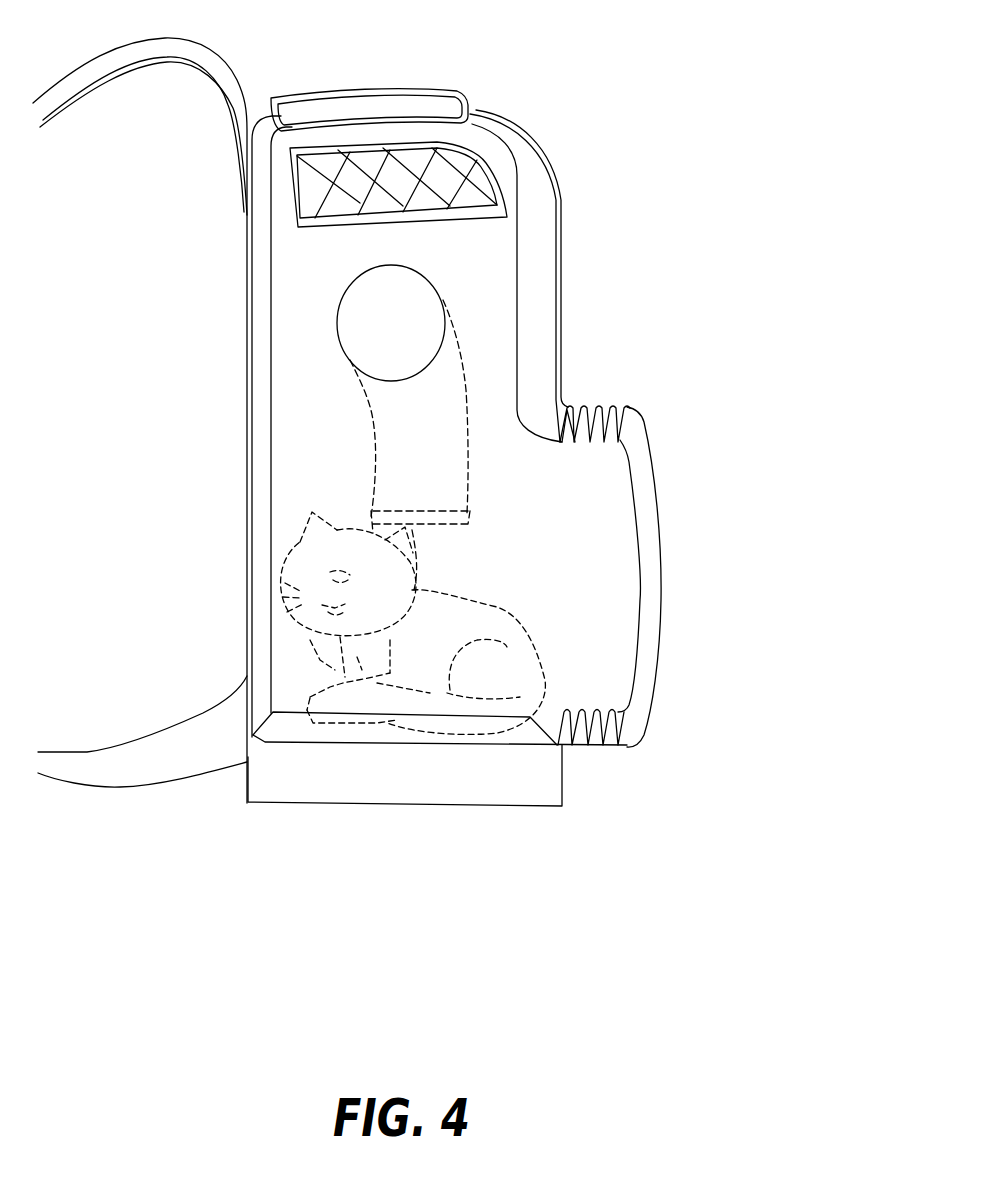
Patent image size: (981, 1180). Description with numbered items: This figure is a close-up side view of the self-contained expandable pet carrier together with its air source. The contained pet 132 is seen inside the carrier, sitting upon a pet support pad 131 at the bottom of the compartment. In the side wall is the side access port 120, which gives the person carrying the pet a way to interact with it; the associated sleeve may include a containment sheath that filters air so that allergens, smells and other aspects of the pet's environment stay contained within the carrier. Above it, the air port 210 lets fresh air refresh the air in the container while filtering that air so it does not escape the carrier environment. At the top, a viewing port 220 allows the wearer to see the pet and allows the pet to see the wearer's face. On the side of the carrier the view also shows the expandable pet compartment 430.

The viewing port 220 is at (445, 78).
The air port 210 is at (497, 160).
The side access port 120 is at (457, 297).
The expandable pet compartment 430 is at (675, 577).
The contained pet 132 is at (545, 693).
The pet support pad 131 is at (452, 782).